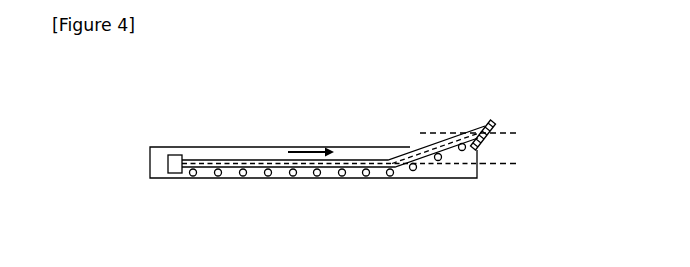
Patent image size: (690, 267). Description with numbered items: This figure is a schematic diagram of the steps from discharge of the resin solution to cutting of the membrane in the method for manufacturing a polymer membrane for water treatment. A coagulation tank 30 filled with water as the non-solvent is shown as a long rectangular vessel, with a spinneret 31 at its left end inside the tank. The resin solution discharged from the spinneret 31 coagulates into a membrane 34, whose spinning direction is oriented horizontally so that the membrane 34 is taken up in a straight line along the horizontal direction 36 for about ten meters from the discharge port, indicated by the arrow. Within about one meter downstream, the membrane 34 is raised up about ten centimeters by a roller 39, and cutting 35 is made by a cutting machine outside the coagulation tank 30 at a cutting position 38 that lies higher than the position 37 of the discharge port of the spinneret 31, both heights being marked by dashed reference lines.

The coagulation tank 30 is at (198, 153).
The spinneret 31 is at (168, 163).
The membrane 34 is at (431, 165).
The cutting 35 is at (493, 110).
The horizontal direction 36 is at (300, 150).
The position of the discharge port 37 is at (514, 169).
The cutting position 38 is at (484, 134).
The roller 39 is at (364, 176).